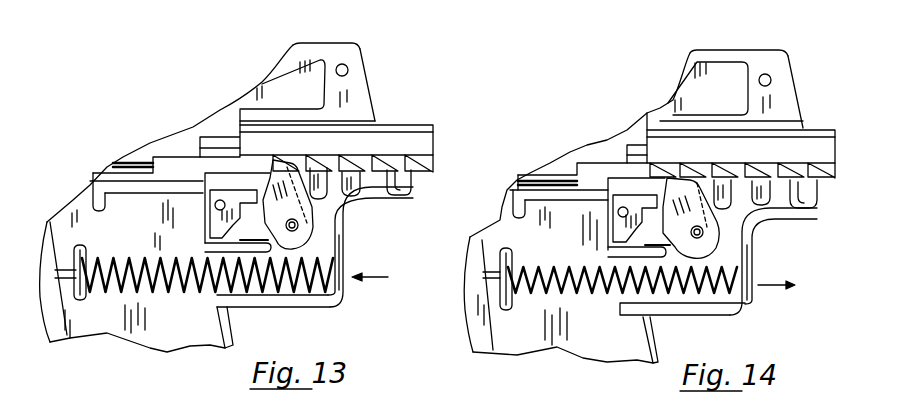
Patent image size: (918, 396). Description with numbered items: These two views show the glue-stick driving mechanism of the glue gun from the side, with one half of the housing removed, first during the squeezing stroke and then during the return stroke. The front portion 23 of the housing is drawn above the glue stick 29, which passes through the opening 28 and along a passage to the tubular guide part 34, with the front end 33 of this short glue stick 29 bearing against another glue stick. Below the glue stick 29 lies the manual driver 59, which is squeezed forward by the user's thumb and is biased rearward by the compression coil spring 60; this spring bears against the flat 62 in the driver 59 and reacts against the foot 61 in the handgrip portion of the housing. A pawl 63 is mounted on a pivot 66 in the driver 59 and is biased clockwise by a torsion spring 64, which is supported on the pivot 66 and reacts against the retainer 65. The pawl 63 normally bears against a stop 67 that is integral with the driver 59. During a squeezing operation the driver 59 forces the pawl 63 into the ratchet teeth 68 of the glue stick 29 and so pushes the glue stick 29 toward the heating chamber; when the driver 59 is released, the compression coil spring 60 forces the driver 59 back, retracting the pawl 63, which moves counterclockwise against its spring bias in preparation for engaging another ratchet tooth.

In FIG. 13, the front portion 23 is at (326, 50).
In FIG. 14, the front portion 23 is at (780, 63).
In FIG. 13, the opening 28 is at (373, 120).
In FIG. 14, the opening 28 is at (803, 128).
In FIG. 13, the glue stick 29 is at (400, 122).
In FIG. 14, the glue stick 29 is at (810, 130).
In FIG. 13, the front end 33 is at (253, 140).
In FIG. 14, the front end 33 is at (642, 140).
In FIG. 13, the tubular guide part 34 is at (163, 148).
In FIG. 14, the tubular guide part 34 is at (575, 152).
In FIG. 13, the manual driver 59 is at (283, 306).
In FIG. 14, the manual driver 59 is at (698, 315).
In FIG. 13, the compression coil spring 60 is at (147, 291).
In FIG. 14, the compression coil spring 60 is at (575, 300).
In FIG. 13, the foot 61 is at (65, 293).
In FIG. 14, the foot 61 is at (500, 306).
In FIG. 13, the flat 62 is at (345, 247).
In FIG. 14, the flat 62 is at (745, 273).
In FIG. 13, the pawl 63 is at (304, 224).
In FIG. 14, the pawl 63 is at (705, 229).
In FIG. 13, the torsion spring 64 is at (253, 240).
In FIG. 14, the torsion spring 64 is at (700, 252).
In FIG. 13, the retainer 65 is at (222, 248).
In FIG. 14, the retainer 65 is at (610, 240).
In FIG. 13, the pivot 66 is at (300, 232).
In FIG. 14, the pivot 66 is at (712, 236).
In FIG. 13, the stop 67 is at (322, 186).
In FIG. 14, the stop 67 is at (728, 190).
In FIG. 13, the ratchet teeth 68 is at (412, 185).
In FIG. 14, the ratchet teeth 68 is at (809, 209).